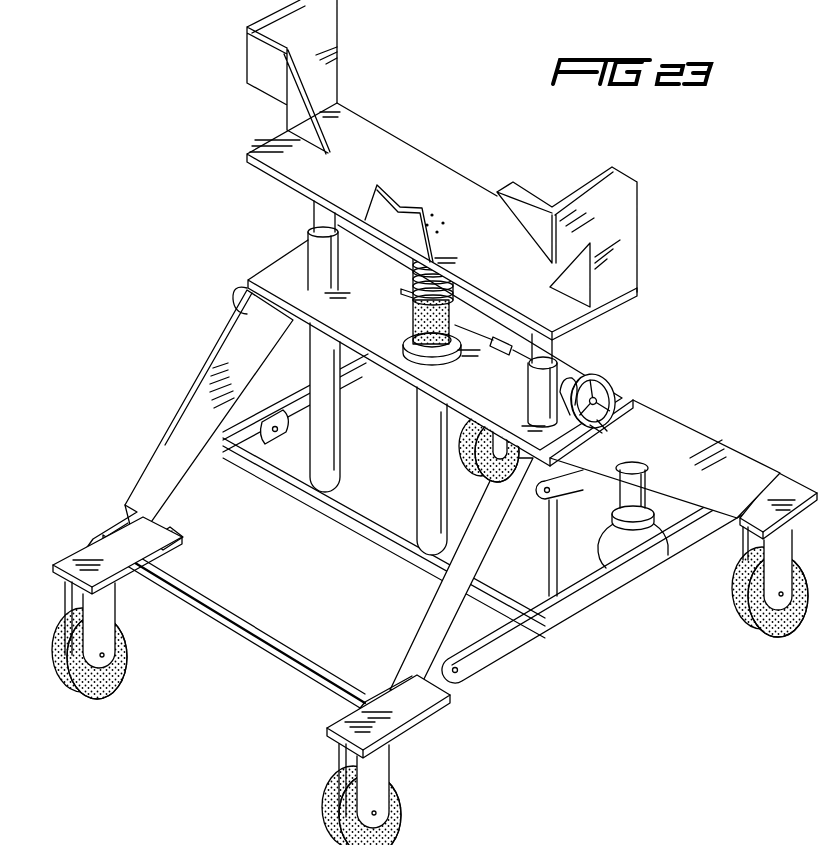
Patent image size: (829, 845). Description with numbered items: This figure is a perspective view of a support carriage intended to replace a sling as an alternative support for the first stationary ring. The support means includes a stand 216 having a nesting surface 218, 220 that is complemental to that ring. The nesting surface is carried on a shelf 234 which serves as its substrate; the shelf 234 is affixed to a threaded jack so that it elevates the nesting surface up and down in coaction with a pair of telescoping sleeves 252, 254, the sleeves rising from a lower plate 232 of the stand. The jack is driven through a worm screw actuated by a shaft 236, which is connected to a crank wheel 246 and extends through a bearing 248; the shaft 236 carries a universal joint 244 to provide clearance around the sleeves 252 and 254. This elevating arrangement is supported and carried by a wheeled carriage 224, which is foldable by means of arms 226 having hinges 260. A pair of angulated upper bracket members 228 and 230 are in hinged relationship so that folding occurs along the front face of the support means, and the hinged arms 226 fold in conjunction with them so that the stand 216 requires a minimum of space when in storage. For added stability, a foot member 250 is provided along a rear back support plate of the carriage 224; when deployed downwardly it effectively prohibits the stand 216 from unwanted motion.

The stand 216 is at (706, 316).
The nesting surface 218 is at (371, 209).
The nesting surface 220 is at (290, 49).
The wheeled carriage 224 is at (228, 717).
The arms 226 is at (298, 405).
The angulated upper bracket member 228 is at (657, 437).
The angulated upper bracket member 230 is at (178, 428).
The lower plate 232 is at (270, 272).
The shelf 234 is at (496, 249).
The shaft 236 is at (484, 332).
The universal joint 244 is at (507, 357).
The crank wheel 246 is at (603, 378).
The bearing 248 is at (562, 390).
The foot member 250 is at (648, 499).
The telescoping sleeve 252 is at (322, 216).
The telescoping sleeve 254 is at (341, 433).
The hinges 260 is at (572, 583).